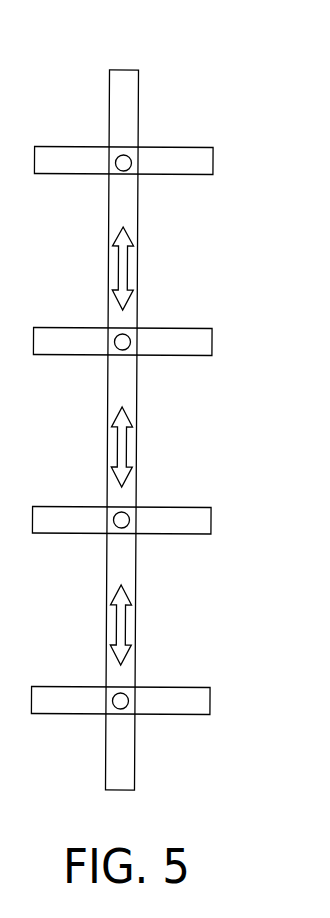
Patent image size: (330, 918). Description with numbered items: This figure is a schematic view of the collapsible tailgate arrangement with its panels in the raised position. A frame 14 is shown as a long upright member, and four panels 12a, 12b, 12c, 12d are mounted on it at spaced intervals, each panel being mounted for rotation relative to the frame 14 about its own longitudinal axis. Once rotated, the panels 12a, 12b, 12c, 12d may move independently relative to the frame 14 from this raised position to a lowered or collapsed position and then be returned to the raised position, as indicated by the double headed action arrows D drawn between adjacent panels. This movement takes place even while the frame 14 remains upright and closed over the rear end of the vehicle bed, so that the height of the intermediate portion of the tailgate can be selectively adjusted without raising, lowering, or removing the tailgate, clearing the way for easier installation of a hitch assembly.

The frame 14 is at (133, 69).
The panel 12d is at (212, 160).
The panel 12c is at (212, 341).
The panel 12b is at (212, 520).
The panel 12a is at (212, 700).
The double headed action arrows D is at (127, 268).